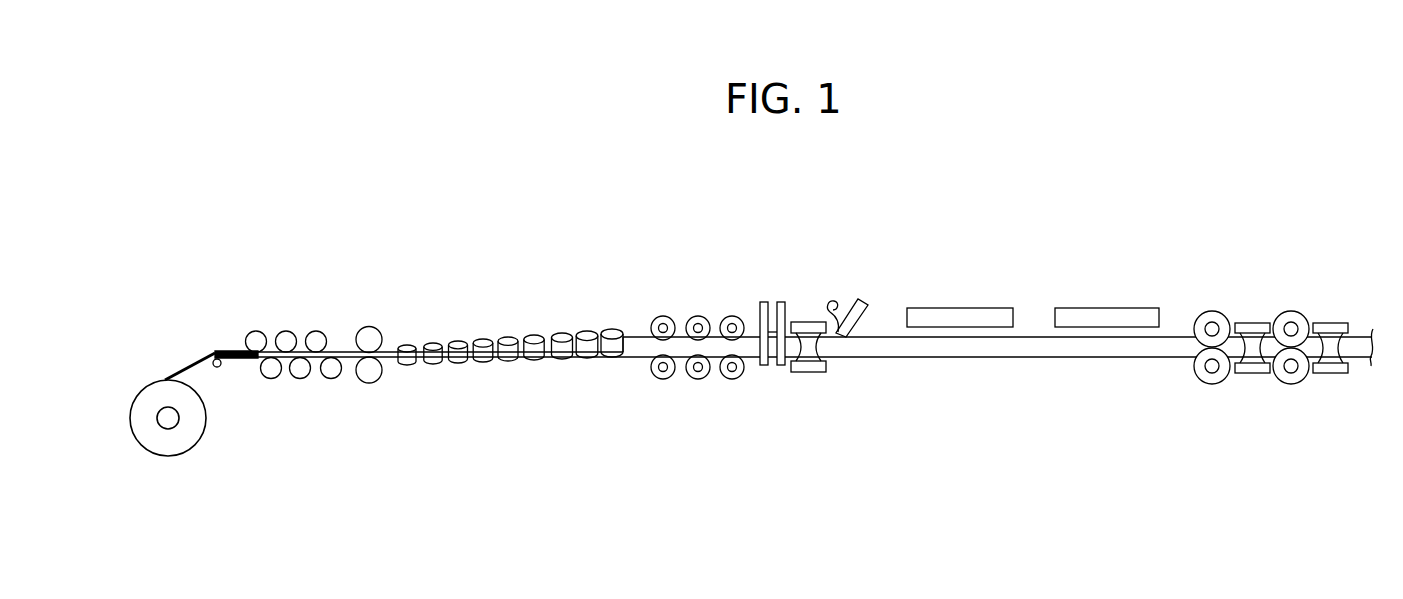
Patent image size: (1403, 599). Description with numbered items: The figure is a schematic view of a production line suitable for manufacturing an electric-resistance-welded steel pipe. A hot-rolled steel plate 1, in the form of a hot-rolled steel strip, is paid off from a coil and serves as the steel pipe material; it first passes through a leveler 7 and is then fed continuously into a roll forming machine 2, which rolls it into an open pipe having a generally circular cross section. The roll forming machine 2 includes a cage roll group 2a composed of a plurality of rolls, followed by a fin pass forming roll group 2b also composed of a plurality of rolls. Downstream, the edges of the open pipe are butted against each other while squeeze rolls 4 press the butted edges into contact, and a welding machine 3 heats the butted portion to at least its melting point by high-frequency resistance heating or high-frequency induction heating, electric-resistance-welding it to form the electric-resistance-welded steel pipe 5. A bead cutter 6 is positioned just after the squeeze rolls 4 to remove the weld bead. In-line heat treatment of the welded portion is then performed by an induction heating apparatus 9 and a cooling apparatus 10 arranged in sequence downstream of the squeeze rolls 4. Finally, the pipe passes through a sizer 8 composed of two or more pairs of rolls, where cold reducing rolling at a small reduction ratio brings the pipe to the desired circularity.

The hot-rolled steel plate 1 is at (191, 358).
The leveler 7 is at (290, 306).
The roll forming machine 2 is at (745, 294).
The cage roll group 2a is at (627, 378).
The fin pass forming roll group 2b is at (645, 378).
The welding machine 3 is at (775, 278).
The squeeze roll 4 is at (810, 298).
The electric-resistance-welded steel pipe 5 is at (889, 358).
The bead cutter 6 is at (850, 287).
The induction heating apparatus 9 is at (959, 315).
The cooling apparatus 10 is at (1107, 315).
The sizer 8 is at (1348, 300).